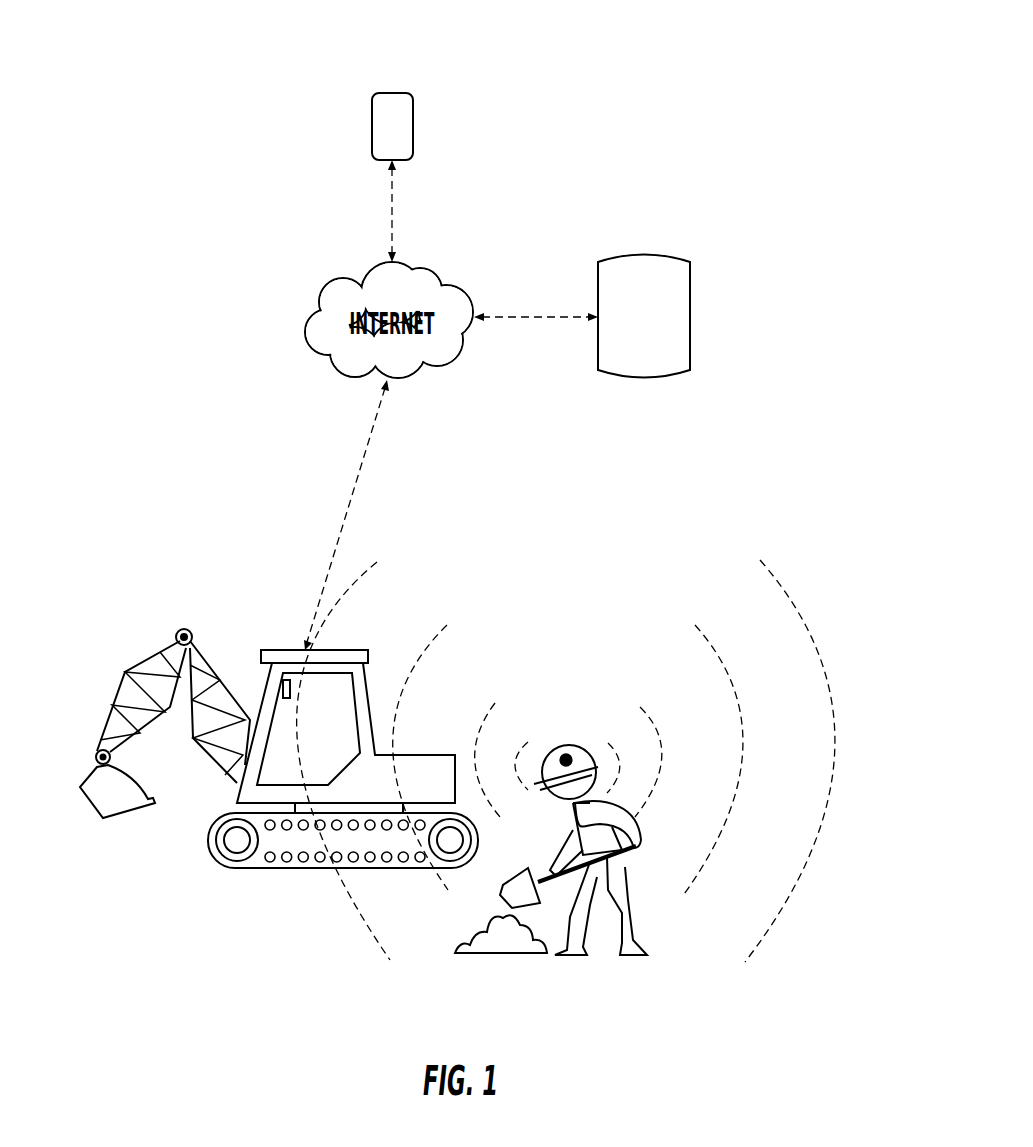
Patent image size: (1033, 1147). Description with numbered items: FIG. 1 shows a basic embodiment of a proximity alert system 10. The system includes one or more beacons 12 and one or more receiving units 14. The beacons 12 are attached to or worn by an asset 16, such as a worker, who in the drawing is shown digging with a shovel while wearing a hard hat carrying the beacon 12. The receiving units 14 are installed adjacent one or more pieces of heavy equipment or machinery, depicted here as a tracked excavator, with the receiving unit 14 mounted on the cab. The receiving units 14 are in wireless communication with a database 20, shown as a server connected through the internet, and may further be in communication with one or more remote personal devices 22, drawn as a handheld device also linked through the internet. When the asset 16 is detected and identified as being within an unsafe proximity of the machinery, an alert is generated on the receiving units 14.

The proximity alert system 10 is at (550, 74).
The beacon 12 is at (567, 755).
The receiving unit 14 is at (290, 677).
The asset 16 is at (637, 807).
The database 20 is at (633, 334).
The remote personal device 22 is at (381, 141).